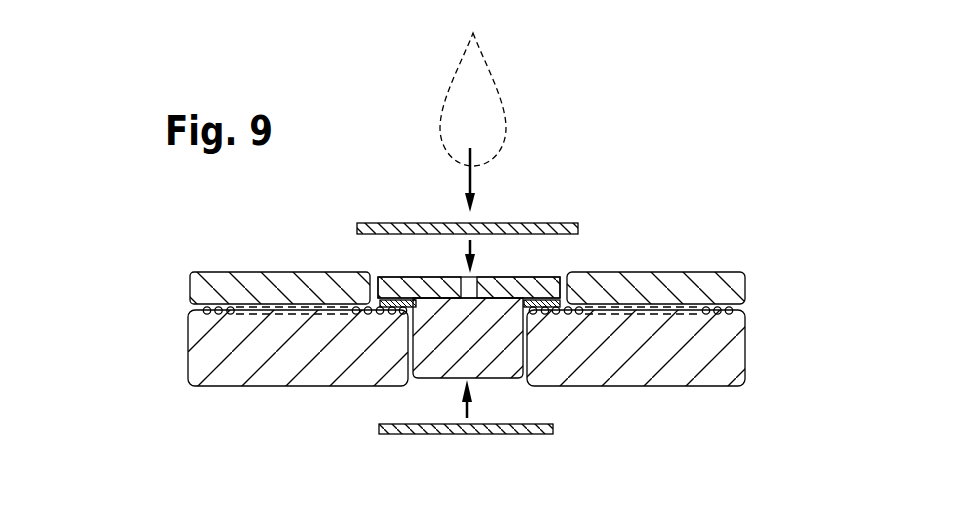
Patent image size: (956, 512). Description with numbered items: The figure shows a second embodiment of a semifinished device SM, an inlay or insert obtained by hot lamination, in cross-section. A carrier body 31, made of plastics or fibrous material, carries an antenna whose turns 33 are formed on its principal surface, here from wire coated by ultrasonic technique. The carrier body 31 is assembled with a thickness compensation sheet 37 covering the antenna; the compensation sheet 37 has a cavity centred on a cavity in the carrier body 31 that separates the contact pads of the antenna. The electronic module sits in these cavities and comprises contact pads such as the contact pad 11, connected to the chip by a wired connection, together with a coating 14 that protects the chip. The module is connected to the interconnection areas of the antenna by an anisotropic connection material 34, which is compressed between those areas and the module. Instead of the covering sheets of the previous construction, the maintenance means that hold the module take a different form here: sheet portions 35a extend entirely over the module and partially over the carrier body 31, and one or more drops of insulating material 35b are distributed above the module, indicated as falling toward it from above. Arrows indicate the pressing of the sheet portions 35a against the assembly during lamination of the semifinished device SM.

The contact pad 11 is at (430, 278).
The coating 14 is at (432, 377).
The carrier body 31 is at (718, 373).
The turns 33 is at (719, 312).
The anisotropic connection material 34 is at (378, 302).
The sheet portions 35a is at (545, 223).
The drops of insulating material 35b is at (488, 137).
The compensation sheet 37 is at (740, 285).
The semifinished device SM is at (104, 319).